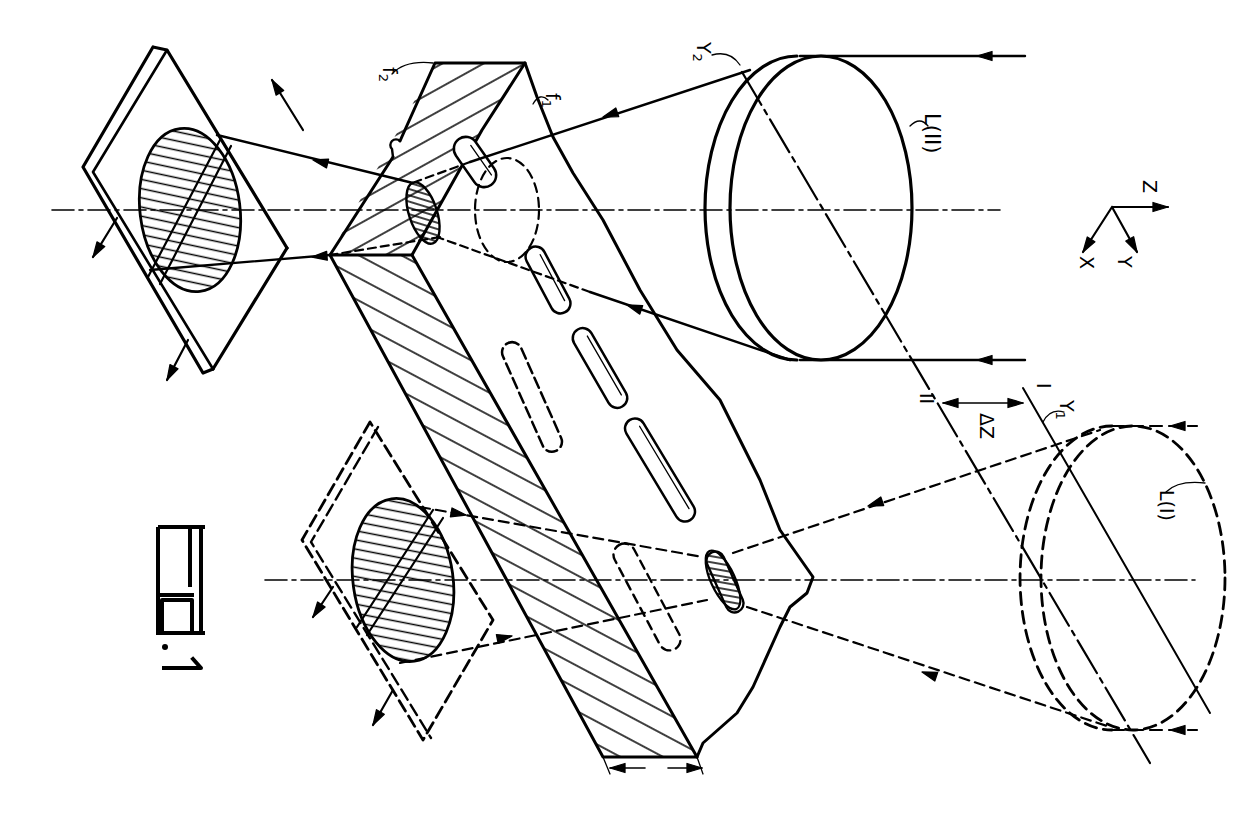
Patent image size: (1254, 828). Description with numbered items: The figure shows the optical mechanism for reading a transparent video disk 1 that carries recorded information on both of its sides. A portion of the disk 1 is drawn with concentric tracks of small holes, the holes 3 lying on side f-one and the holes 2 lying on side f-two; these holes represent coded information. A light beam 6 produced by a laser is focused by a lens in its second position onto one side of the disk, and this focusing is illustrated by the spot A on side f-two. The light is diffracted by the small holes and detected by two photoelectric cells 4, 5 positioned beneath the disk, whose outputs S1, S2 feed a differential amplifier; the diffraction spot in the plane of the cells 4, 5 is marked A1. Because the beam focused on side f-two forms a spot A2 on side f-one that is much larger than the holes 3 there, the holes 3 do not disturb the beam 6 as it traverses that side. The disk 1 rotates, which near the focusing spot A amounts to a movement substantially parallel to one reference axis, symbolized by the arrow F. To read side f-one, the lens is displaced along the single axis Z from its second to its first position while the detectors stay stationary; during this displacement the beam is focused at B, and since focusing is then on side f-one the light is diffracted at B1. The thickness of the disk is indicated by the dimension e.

The video disk 1 is at (378, 338).
The small holes on side f2 2 is at (393, 142).
The small holes on side f1 3 is at (488, 140).
The photoelectric cell 4 is at (257, 293).
The photoelectric cell 5 is at (190, 93).
The beam 6 is at (876, 361).
The focusing spot A is at (430, 256).
The diffraction spot A1 is at (173, 318).
The spot on side f1 A2 is at (537, 220).
The focusing spot B is at (718, 608).
The diffraction spot B1 is at (417, 667).
The output of cell 4 S1 is at (104, 250).
The output of cell 5 S2 is at (177, 374).
The arrow F is at (292, 110).
The plate thickness e is at (653, 765).